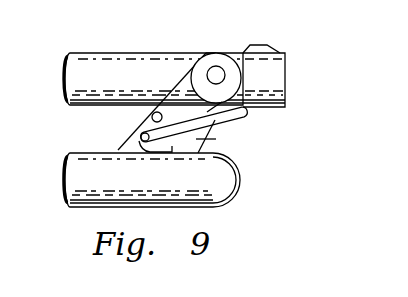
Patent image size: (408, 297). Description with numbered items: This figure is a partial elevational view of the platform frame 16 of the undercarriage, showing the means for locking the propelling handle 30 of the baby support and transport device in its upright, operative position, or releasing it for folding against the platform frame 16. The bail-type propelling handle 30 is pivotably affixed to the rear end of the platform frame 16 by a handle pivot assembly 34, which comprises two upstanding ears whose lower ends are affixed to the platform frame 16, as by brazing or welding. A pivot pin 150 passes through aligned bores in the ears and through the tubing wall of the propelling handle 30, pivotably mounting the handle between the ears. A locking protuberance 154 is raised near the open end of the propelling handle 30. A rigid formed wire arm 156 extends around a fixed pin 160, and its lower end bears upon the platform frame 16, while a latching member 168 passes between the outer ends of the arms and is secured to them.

The propelling handle 30 is at (93, 58).
The locking protuberance 154 is at (268, 44).
The formed wire arm 156 is at (180, 122).
The pivot pin 150 is at (216, 66).
The latching member 168 is at (247, 116).
The fixed pin 160 is at (140, 134).
The handle pivot assembly 34 is at (206, 139).
The platform frame 16 is at (205, 188).